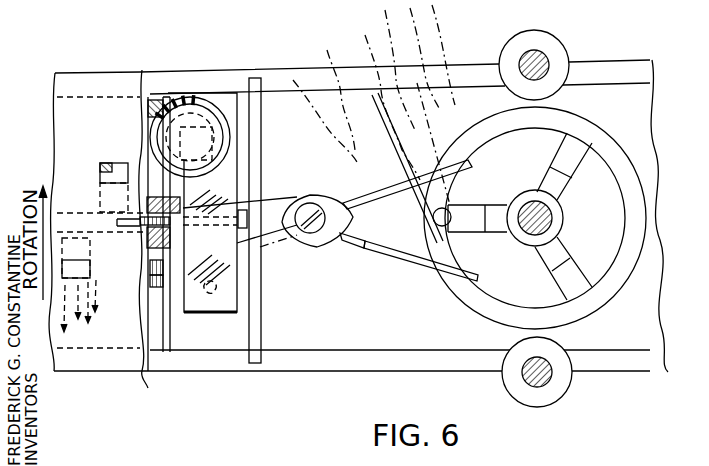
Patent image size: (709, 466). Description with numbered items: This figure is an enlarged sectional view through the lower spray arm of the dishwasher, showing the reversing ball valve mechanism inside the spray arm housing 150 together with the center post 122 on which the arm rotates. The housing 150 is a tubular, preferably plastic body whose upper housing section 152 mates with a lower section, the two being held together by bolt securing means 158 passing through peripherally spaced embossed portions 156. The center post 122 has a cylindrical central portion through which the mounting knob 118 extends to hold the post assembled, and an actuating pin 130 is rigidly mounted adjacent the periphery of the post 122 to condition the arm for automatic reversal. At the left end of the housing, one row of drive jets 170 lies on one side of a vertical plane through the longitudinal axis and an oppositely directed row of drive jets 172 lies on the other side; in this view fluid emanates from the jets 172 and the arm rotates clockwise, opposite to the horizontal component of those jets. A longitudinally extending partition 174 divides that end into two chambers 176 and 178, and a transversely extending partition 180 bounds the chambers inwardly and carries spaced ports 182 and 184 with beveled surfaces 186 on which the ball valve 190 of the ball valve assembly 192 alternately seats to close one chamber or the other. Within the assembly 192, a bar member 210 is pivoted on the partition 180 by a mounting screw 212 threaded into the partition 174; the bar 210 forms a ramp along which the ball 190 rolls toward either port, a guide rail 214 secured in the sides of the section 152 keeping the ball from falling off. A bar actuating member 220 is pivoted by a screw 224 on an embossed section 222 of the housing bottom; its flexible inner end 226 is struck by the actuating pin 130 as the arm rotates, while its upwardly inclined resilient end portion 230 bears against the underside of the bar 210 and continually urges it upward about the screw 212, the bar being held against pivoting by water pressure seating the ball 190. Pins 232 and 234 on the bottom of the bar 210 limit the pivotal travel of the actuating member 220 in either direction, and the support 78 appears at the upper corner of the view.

The support 78 is at (708, 4).
The mounting knob 118 is at (535, 200).
The center post 122 is at (585, 196).
The actuating pin 130 is at (449, 210).
The housing 150 is at (117, 68).
The upper housing section 152 is at (295, 63).
The embossed portions 156 is at (513, 45).
The securing means 158 is at (544, 58).
The drive jets 170 is at (100, 166).
The drive jets 172 is at (93, 309).
The longitudinally extending partition 174 is at (100, 208).
The chamber 176 is at (143, 80).
The chamber 178 is at (147, 372).
The transversely extending partition 180 is at (147, 255).
The port 182 is at (146, 108).
The port 184 is at (152, 322).
The beveled surfaces 186 is at (166, 98).
The ball valve 190 is at (208, 96).
The ball valve assembly 192 is at (240, 103).
The bar member 210 is at (238, 296).
The mounting screw 212 is at (266, 250).
The guide rail 214 is at (262, 166).
The bar actuating member 220 is at (337, 243).
The embossed section 222 is at (300, 196).
The screw 224 is at (317, 166).
The flexible inner end 226 is at (447, 284).
The resilient end portion 230 is at (183, 223).
The pin 232 is at (262, 140).
The pin 234 is at (212, 300).